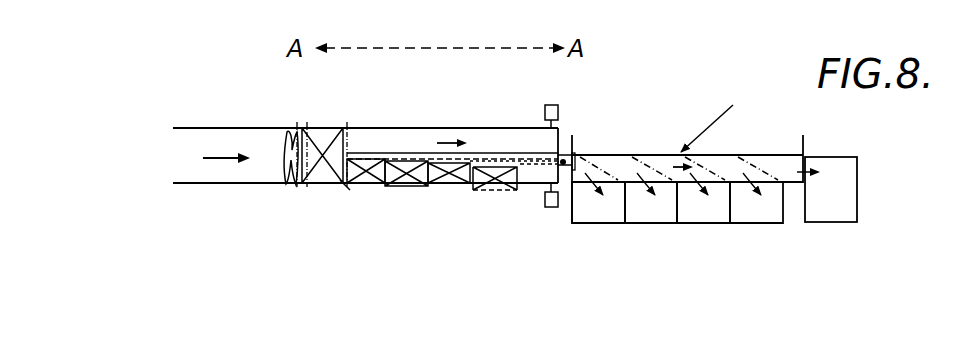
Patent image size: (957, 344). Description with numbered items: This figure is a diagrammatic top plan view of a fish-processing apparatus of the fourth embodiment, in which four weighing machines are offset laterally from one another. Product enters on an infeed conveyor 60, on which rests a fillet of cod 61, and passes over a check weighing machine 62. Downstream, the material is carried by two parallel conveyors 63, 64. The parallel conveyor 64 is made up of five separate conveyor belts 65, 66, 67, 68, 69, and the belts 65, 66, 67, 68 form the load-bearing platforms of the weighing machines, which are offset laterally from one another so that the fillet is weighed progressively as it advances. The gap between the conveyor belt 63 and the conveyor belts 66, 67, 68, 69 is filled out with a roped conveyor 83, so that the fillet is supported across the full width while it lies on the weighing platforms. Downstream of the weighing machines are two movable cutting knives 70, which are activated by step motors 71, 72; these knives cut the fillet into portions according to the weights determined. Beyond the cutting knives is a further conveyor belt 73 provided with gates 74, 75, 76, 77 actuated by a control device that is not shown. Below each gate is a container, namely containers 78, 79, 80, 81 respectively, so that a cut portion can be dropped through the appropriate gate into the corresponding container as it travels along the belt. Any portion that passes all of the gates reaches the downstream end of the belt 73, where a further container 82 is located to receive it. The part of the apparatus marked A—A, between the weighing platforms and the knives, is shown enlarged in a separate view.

The infeed conveyor 60 is at (222, 165).
The fillet of cod 61 is at (286, 183).
The check weighing machine 62 is at (319, 128).
The parallel conveyor 63 is at (386, 128).
The parallel conveyor 64 is at (343, 192).
The conveyor belt 65 is at (366, 185).
The conveyor belt 66 is at (410, 187).
The conveyor belt 67 is at (450, 184).
The conveyor belt 68 is at (492, 191).
The conveyor belt 69 is at (522, 185).
The movable cutting knife 70 is at (566, 152).
The step motor 71 is at (545, 107).
The step motor 72 is at (552, 208).
The conveyor belt 73 is at (725, 115).
The gate 74 is at (590, 160).
The gate 75 is at (647, 155).
The gate 76 is at (698, 153).
The gate 77 is at (753, 156).
The container 78 is at (610, 215).
The container 79 is at (662, 213).
The container 80 is at (715, 213).
The container 81 is at (765, 212).
The container 82 is at (833, 215).
The roped conveyor 83 is at (525, 167).